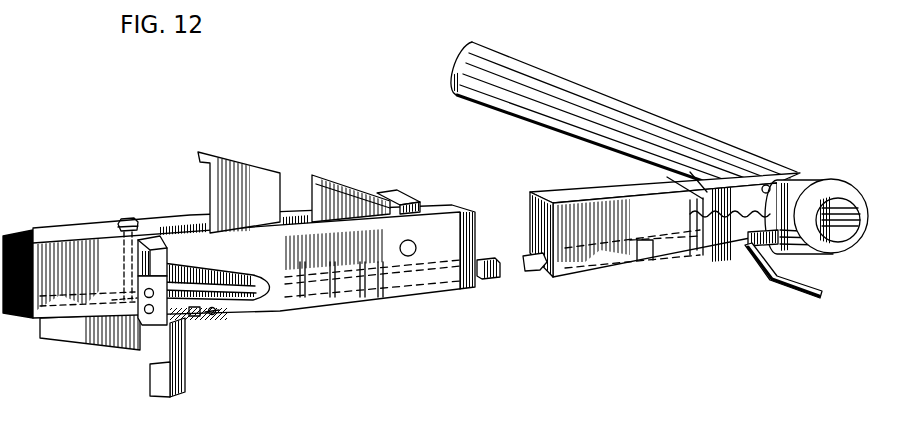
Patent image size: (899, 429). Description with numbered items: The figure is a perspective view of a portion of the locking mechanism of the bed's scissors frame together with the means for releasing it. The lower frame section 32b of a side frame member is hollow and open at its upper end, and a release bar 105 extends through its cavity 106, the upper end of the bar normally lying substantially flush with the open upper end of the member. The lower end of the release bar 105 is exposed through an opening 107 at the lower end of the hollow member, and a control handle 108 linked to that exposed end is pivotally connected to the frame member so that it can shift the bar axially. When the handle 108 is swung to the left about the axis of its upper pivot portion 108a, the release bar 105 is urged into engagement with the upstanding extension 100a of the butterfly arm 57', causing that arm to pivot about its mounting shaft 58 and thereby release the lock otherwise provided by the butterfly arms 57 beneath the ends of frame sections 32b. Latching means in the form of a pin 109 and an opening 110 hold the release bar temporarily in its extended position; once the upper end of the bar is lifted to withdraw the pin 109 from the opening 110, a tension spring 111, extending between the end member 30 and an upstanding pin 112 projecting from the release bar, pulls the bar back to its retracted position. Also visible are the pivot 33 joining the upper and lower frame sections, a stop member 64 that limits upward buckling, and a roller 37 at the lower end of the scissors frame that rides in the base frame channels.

The end frame member 30 is at (643, 113).
The lower frame section 32b is at (398, 300).
The pivot 33 is at (417, 245).
The roller 37 is at (821, 183).
The butterfly arm 57 is at (366, 181).
The butterfly arm 57' is at (81, 357).
The shaft 58 is at (100, 232).
The stop member 64 is at (263, 177).
The upward extension 100a is at (152, 322).
The release bar 105 is at (490, 281).
The cavity 106 is at (537, 193).
The opening 107 is at (750, 246).
The control handle 108 is at (787, 292).
The upper pivot portion 108a is at (748, 185).
The pin 109 is at (222, 318).
The opening 110 is at (200, 323).
The tension spring 111 is at (697, 168).
The upstanding pin 112 is at (693, 228).